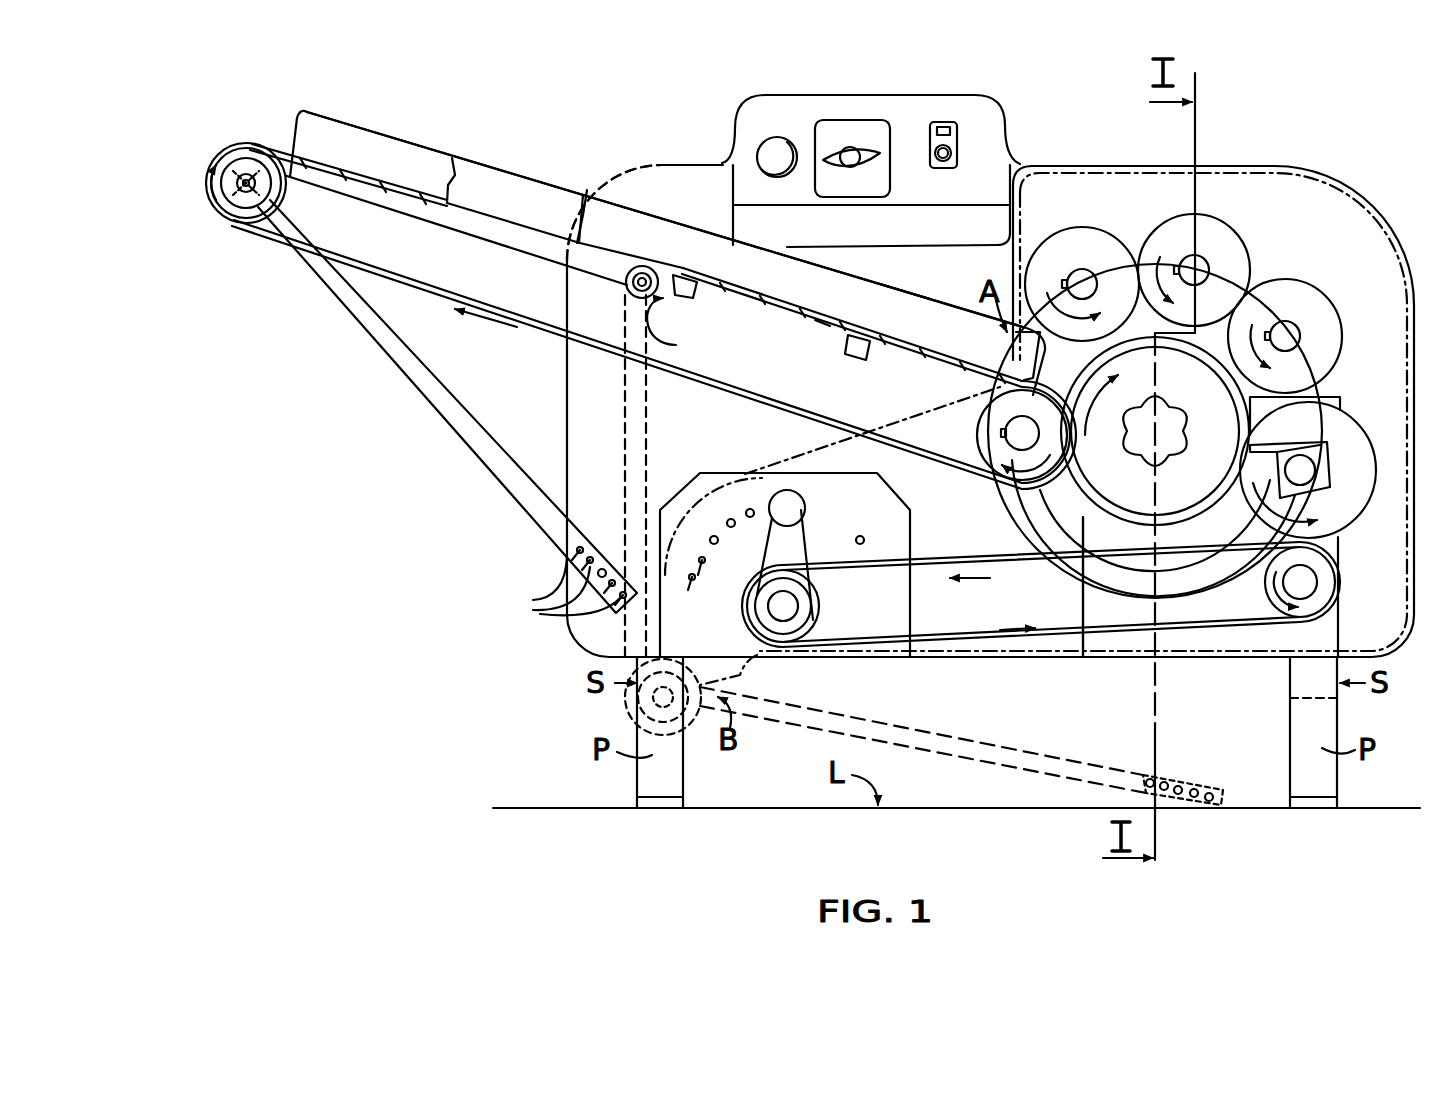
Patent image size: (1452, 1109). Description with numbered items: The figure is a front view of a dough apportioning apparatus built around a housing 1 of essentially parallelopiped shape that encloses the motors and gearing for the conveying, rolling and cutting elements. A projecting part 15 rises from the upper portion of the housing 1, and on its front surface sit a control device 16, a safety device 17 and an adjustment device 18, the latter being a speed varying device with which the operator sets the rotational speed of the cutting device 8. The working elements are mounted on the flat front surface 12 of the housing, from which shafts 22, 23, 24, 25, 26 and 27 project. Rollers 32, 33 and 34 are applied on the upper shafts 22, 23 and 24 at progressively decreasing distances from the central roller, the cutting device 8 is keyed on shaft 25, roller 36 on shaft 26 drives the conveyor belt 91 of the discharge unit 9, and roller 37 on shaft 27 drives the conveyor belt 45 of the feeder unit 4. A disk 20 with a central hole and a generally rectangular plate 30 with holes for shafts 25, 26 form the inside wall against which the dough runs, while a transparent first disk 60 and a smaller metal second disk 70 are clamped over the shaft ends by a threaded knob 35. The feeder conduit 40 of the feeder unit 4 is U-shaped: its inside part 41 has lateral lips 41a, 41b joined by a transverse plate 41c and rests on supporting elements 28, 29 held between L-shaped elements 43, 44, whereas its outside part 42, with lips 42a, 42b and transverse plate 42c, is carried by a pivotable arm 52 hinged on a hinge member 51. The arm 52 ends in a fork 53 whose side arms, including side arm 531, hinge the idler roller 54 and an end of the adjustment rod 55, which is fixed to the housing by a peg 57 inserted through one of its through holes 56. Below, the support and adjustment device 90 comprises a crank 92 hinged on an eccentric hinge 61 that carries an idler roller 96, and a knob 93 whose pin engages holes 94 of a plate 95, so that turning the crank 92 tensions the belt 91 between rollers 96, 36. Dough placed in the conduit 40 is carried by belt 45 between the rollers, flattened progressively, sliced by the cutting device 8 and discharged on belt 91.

The housing 1 is at (1246, 158).
The feeder unit 4 is at (670, 195).
The cutting device 8 is at (1343, 468).
The discharge unit 9 is at (1062, 638).
The flat front surface 12 is at (1290, 220).
The projecting part 15 is at (1018, 130).
The control device 16 is at (865, 118).
The safety device 17 is at (778, 135).
The adjustment device 18 is at (960, 138).
The disk 20 is at (1082, 583).
The shaft 22 is at (1087, 270).
The shaft 23 is at (1198, 265).
The shaft 24 is at (1295, 330).
The shaft 25 is at (1300, 468).
The shaft 26 is at (1307, 577).
The shaft 27 is at (1005, 400).
The supporting element 28 is at (855, 330).
The supporting element 29 is at (697, 288).
The plate 30 is at (1246, 640).
The roller 32 is at (1060, 243).
The roller 33 is at (1232, 258).
The roller 34 is at (1320, 343).
The threaded knob 35 is at (1178, 438).
The roller 36 is at (1320, 597).
The roller 37 is at (998, 438).
The feeder conduit 40 is at (345, 137).
The inside part of feeder conduit 41 is at (862, 272).
The lateral lip 41a is at (905, 300).
The lateral lip 41b is at (637, 223).
The transverse plate 41c is at (773, 312).
The outside part of feeder conduit 42 is at (440, 148).
The lateral lip 42a is at (390, 158).
The lateral lip 42b is at (500, 185).
The transverse plate 42c is at (398, 192).
The L-shaped element 43 is at (873, 358).
The L-shaped element 44 is at (681, 332).
The conveyor belt 45 is at (490, 303).
The hinge member 51 is at (638, 288).
The pivotable arm 52 is at (450, 232).
The fork 53 is at (258, 145).
The side arm 531 is at (262, 222).
The idler roller 54 is at (228, 209).
The adjustment rod 55 is at (443, 410).
The through holes 56 is at (555, 590).
The peg 57 is at (607, 555).
The first disk 60 is at (1030, 513).
The eccentric hinge 61 is at (770, 612).
The second disk 70 is at (1032, 543).
The support and adjustment device 90 is at (752, 470).
The conveyor belt 91 is at (970, 562).
The crank 92 is at (797, 555).
The knob 93 is at (785, 510).
The holes 94 is at (858, 530).
The plate 95 is at (695, 482).
The idler roller 96 is at (812, 615).